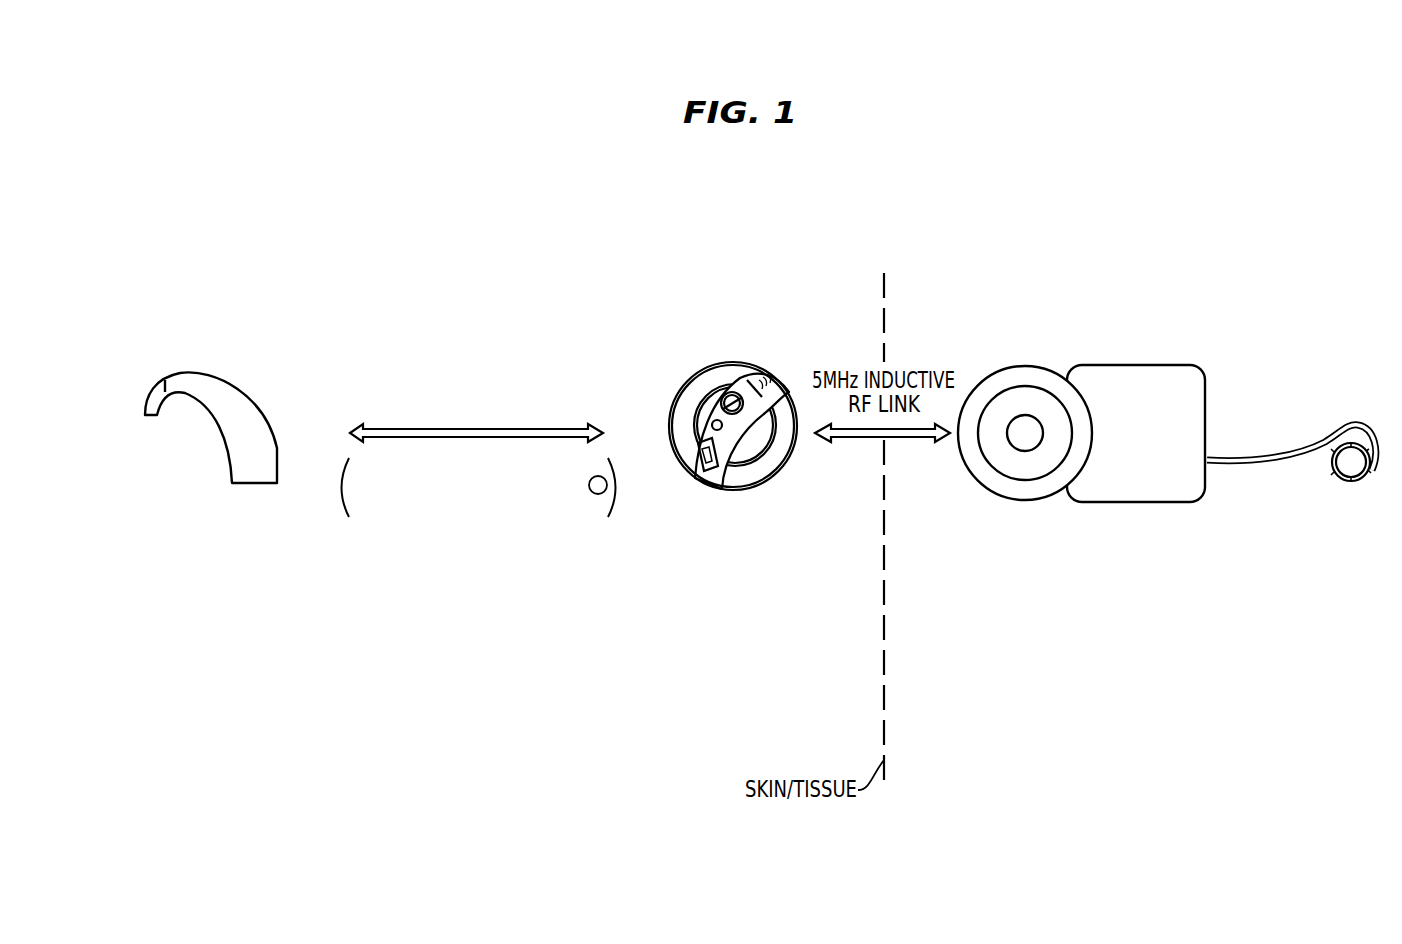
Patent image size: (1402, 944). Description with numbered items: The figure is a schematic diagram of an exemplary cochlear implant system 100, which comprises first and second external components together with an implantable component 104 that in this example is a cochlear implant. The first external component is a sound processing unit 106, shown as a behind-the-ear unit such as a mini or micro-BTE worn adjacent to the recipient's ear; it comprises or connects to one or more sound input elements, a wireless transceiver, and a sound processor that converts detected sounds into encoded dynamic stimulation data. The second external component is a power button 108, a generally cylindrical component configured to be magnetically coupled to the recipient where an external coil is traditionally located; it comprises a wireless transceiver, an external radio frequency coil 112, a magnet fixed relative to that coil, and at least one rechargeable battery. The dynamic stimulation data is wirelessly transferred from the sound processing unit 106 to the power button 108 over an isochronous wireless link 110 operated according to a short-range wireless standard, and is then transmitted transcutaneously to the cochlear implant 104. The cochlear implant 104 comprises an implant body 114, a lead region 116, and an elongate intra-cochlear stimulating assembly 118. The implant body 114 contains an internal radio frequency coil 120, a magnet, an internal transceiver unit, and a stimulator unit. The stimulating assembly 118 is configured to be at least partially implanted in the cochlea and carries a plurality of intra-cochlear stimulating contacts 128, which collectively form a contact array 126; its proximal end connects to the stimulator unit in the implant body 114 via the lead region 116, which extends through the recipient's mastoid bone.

The cochlear implant system 100 is at (312, 258).
The implantable component 104 is at (1166, 242).
The sound processing unit 106 is at (230, 468).
The power button 108 is at (733, 452).
The isochronous wireless link 110 is at (479, 428).
The external radio frequency coil 112 is at (720, 370).
The implant body 114 is at (1132, 365).
The lead region 116 is at (1240, 467).
The elongate intra-cochlear stimulating assembly 118 is at (1328, 500).
The internal radio frequency coil 120 is at (1020, 366).
The contact array 126 is at (1377, 487).
The intra-cochlear stimulating contacts 128 is at (1360, 482).